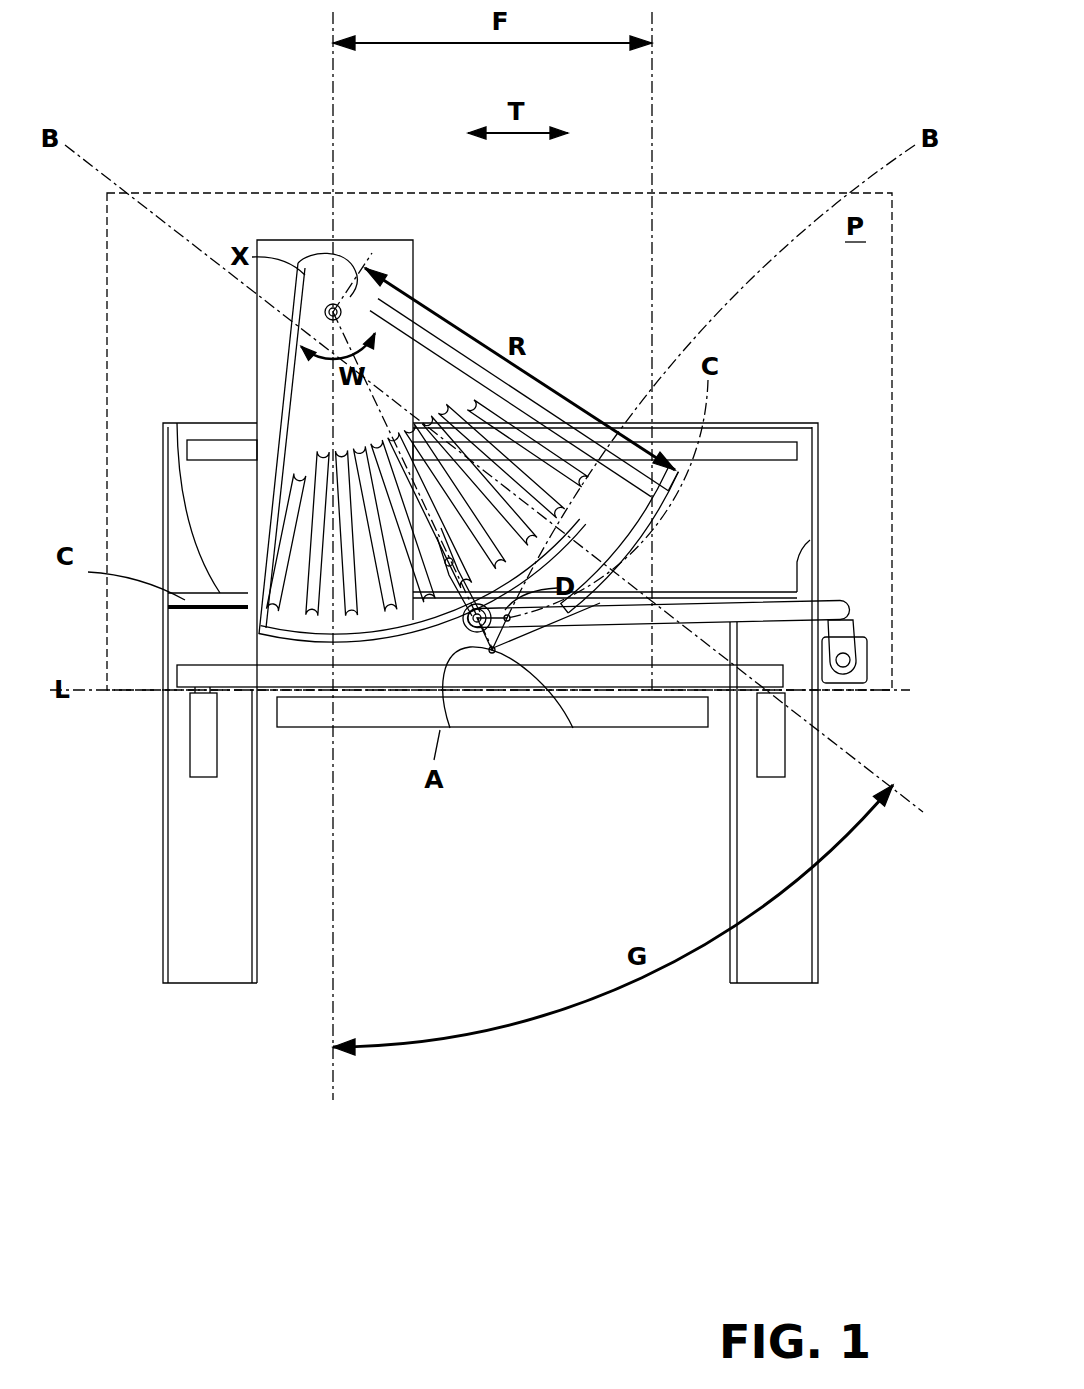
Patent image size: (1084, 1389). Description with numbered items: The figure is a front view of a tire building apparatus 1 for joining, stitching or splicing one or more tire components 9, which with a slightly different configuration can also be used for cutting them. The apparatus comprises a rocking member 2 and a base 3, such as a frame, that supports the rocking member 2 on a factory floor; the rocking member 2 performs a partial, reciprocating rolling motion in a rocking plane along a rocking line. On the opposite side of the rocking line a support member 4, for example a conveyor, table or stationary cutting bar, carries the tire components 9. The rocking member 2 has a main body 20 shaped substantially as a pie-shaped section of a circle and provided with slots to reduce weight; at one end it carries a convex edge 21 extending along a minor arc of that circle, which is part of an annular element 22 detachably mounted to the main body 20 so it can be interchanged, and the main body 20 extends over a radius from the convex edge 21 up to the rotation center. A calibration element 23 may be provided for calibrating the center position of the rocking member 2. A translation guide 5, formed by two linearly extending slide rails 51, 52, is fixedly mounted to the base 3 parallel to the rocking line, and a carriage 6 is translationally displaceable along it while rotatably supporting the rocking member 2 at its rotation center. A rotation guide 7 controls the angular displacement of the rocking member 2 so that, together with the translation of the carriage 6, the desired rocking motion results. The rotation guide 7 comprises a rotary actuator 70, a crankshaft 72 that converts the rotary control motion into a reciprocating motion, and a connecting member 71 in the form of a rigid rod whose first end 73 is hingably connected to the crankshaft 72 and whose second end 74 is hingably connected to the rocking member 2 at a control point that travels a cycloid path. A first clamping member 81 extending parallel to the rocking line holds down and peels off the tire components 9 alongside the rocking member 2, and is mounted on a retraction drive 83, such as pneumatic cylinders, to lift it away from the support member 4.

The tire building apparatus 1 is at (107, 135).
The rocking member 2 is at (499, 441).
The base 3 is at (178, 552).
The support member 4 is at (390, 715).
The translation guide 5 is at (431, 675).
The carriage 6 is at (302, 250).
The rotation guide 7 is at (668, 655).
The tire components 9 is at (495, 697).
The main body 20 is at (417, 337).
The convex edge 21 is at (643, 527).
The annular element 22 is at (625, 507).
The calibration element 23 is at (540, 505).
The slide rail 51 is at (215, 445).
The slide rail 52 is at (183, 600).
The actuator 70 is at (712, 655).
The connecting member 71 is at (770, 603).
The crankshaft 72 is at (850, 627).
The first end 73 is at (837, 605).
The second end 74 is at (495, 640).
The first clamping member 81 is at (180, 680).
The retraction drive 83 is at (200, 770).